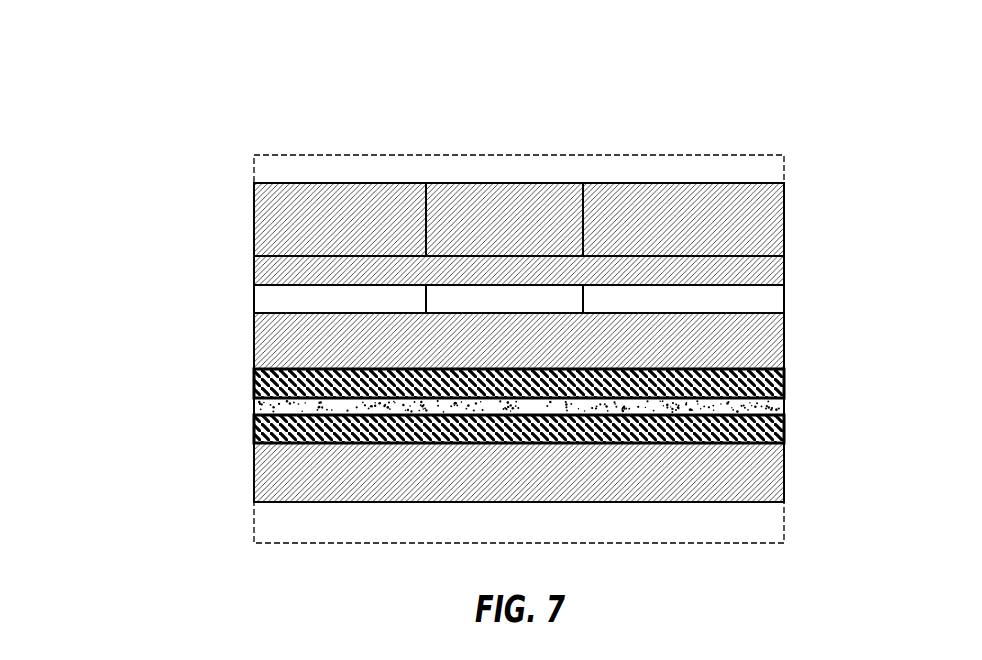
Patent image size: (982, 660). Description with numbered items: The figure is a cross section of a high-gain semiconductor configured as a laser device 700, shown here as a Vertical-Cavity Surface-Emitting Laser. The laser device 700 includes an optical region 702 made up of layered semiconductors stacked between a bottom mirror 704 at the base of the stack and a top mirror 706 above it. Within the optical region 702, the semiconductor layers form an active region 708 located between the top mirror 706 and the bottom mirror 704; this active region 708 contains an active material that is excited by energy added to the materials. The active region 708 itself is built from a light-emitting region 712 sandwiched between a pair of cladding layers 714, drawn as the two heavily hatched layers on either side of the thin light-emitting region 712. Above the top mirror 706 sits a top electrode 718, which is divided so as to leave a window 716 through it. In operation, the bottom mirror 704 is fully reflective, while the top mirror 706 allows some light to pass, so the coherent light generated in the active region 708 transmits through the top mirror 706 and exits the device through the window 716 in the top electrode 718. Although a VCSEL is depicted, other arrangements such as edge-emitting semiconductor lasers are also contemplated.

The laser device 700 is at (502, 80).
The optical region 702 is at (464, 429).
The bottom mirror 704 is at (707, 502).
The top mirror 706 is at (786, 268).
The active region 708 is at (507, 380).
The light-emitting region 712 is at (786, 406).
The cladding layers 714 is at (257, 428).
The window 716 is at (445, 205).
The top electrode 718 is at (718, 205).